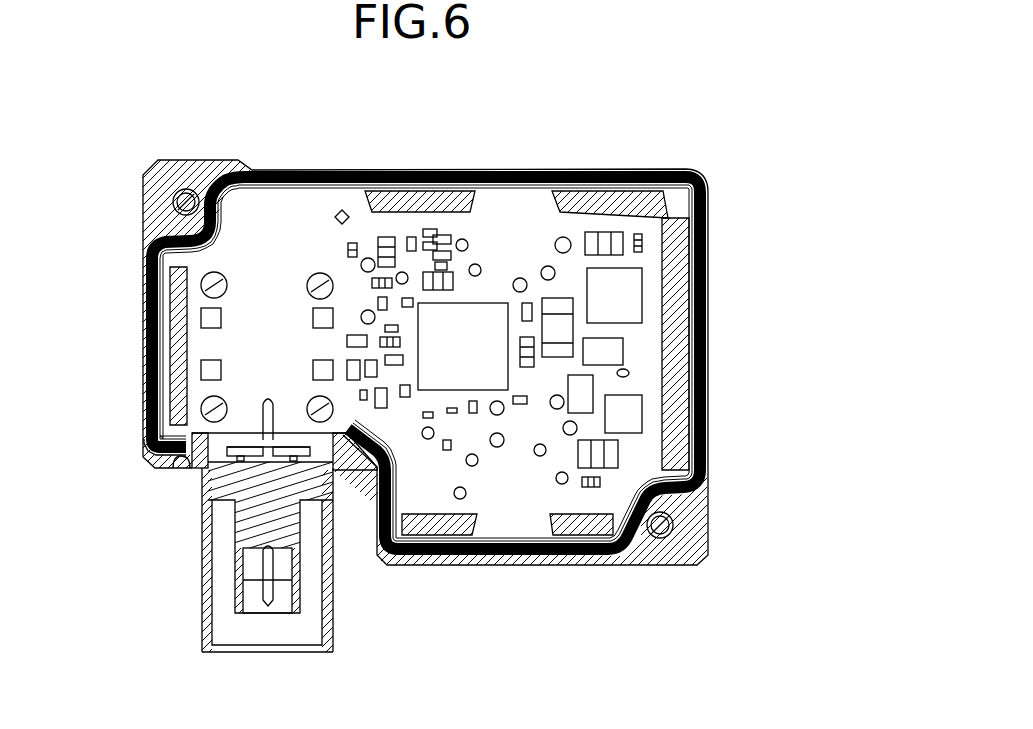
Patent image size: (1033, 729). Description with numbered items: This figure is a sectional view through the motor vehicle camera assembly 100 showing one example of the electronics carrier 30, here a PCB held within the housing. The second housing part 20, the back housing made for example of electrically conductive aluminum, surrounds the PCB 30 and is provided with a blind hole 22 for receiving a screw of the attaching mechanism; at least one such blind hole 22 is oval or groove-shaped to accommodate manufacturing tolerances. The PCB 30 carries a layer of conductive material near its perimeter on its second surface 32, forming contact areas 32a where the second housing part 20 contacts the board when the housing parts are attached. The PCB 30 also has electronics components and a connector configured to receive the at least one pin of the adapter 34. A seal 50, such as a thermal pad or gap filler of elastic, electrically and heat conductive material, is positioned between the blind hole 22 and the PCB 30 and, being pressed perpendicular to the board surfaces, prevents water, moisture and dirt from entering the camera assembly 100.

The motor vehicle camera assembly 100 is at (626, 150).
The second housing part 20 is at (180, 150).
The blind hole 22 is at (174, 200).
The electronics carrier 30 is at (296, 212).
The second surface 32 is at (500, 205).
The contact area 32a is at (378, 200).
The adapter 34 is at (203, 558).
The seal 50 is at (714, 378).